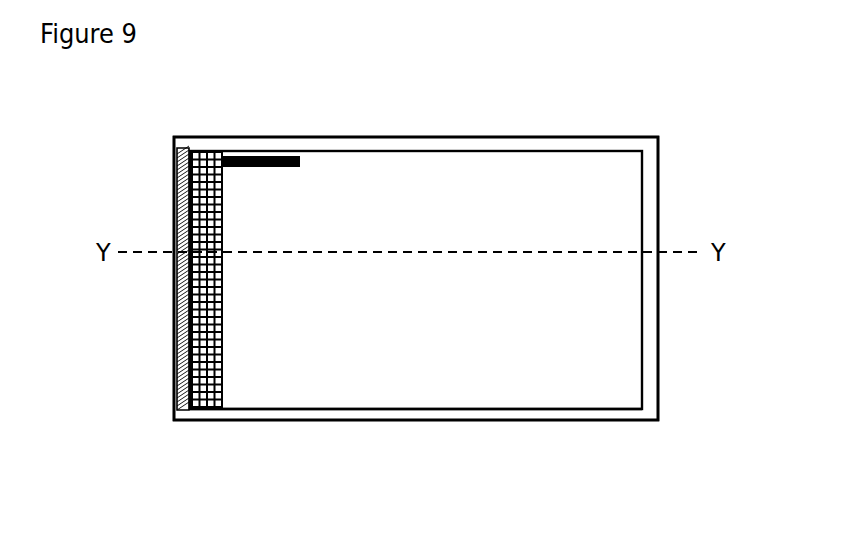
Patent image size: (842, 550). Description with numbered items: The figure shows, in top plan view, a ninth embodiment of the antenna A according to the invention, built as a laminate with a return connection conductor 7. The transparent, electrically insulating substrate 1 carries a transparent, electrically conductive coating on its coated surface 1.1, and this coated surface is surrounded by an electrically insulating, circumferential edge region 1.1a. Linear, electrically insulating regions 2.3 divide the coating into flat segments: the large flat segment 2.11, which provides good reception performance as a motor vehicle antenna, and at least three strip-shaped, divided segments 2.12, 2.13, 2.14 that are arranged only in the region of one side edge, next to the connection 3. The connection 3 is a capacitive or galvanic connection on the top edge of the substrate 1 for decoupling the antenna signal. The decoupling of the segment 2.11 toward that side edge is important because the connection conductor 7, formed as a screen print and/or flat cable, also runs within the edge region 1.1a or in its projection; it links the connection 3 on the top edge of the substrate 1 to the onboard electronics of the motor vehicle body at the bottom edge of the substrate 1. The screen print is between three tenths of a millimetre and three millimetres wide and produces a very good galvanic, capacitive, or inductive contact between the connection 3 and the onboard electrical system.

The antenna A is at (398, 137).
The transparent, electrically insulating substrate 1 is at (572, 424).
The coated surface of the transparent, electrically insulating substrate 1.1 is at (483, 460).
The electrically insulating, circumferential edge region 1.1a is at (455, 414).
The connection conductor 7 is at (178, 181).
The connection for decoupling the antenna signal 3 is at (232, 158).
The linear, electrically insulating region 2.3 is at (190, 262).
The flat segment 2.11 is at (230, 305).
The divided flat segment 2.12 is at (205, 290).
The divided flat segment 2.13 is at (208, 363).
The divided flat segment 2.14 is at (196, 344).